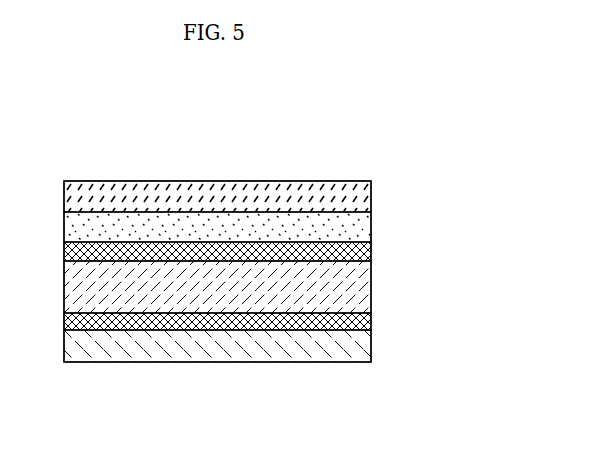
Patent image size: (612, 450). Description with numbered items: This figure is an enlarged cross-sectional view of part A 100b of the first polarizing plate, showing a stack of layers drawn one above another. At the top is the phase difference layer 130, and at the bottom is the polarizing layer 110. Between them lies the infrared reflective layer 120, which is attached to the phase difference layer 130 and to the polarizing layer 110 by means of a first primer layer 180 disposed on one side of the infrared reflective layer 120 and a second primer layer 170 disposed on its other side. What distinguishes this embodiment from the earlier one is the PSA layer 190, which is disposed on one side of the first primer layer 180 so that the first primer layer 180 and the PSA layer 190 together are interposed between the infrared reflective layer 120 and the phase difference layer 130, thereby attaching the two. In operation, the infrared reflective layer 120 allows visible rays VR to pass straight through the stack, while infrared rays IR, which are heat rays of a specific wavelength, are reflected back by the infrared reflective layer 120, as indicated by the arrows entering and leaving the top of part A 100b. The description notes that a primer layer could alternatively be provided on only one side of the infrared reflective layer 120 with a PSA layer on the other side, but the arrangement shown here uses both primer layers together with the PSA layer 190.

The part A of first polarizing plate 100b is at (267, 104).
The polarizing layer 110 is at (360, 347).
The infrared reflective layer 120 is at (369, 281).
The phase difference layer 130 is at (372, 189).
The second primer layer 170 is at (372, 318).
The first primer layer 180 is at (372, 248).
The PSA layer 190 is at (372, 225).
The part A is at (332, 180).
The infrared rays IR is at (198, 150).
The visible rays VR is at (255, 150).